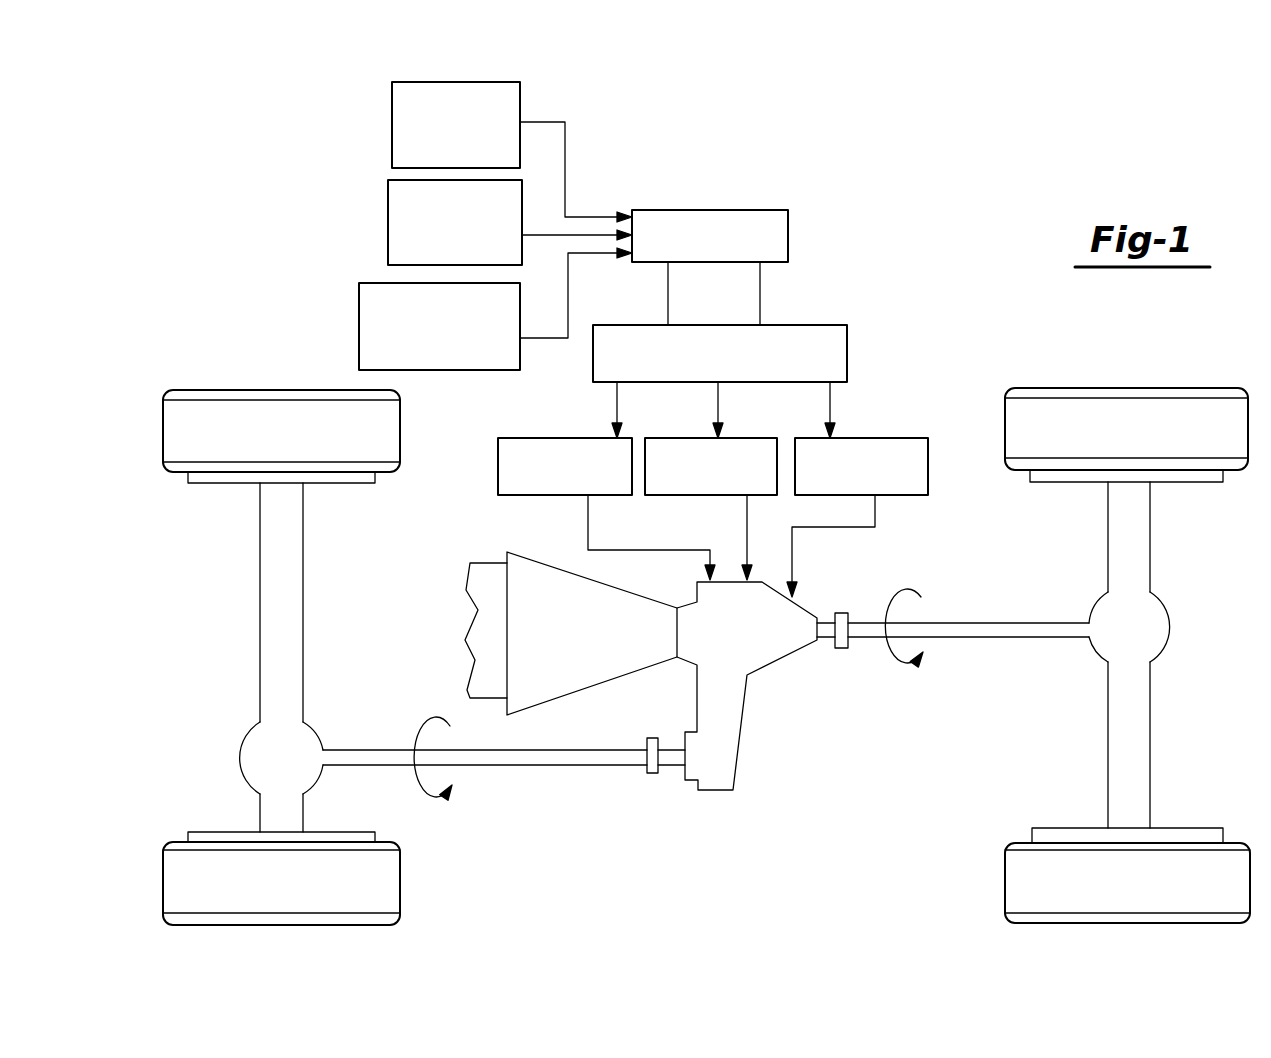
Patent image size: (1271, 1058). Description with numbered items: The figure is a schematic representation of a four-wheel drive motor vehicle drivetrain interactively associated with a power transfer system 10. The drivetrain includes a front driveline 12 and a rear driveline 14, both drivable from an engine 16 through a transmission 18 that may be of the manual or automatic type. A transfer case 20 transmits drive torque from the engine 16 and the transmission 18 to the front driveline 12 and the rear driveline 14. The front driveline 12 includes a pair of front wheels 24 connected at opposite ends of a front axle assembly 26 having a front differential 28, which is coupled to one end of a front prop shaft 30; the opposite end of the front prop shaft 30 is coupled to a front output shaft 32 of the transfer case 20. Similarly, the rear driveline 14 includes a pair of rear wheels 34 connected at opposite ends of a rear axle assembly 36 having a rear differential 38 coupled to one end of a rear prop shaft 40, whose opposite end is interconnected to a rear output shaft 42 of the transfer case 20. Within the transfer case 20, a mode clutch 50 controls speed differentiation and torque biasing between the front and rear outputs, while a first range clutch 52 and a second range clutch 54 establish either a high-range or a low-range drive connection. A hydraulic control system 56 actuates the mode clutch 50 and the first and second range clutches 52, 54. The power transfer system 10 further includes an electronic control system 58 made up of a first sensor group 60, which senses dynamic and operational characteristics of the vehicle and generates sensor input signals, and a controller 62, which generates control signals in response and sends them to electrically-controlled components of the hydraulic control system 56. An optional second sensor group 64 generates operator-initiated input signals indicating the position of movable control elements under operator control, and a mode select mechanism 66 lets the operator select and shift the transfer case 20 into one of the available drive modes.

The power transfer system 10 is at (879, 270).
The front driveline 12 is at (333, 635).
The rear driveline 14 is at (1020, 578).
The engine 16 is at (470, 603).
The transmission 18 is at (610, 656).
The transfer case 20 is at (786, 672).
The front wheels 24 is at (218, 427).
The front axle assembly 26 is at (270, 560).
The front differential 28 is at (262, 738).
The front prop shaft 30 is at (607, 766).
The front output shaft 32 is at (667, 775).
The rear wheels 34 is at (1077, 443).
The rear axle assembly 36 is at (1130, 522).
The rear differential 38 is at (1145, 622).
The rear prop shaft 40 is at (1025, 627).
The rear output shaft 42 is at (830, 625).
The mode clutch 50 is at (977, 437).
The first range clutch 52 is at (540, 495).
The second range clutch 54 is at (752, 438).
The hydraulic control system 56 is at (856, 336).
The electronic control system 58 is at (612, 163).
The first sensor group 60 is at (392, 120).
The controller 62 is at (727, 210).
The second sensor group 64 is at (388, 232).
The mode select mechanism 66 is at (492, 372).